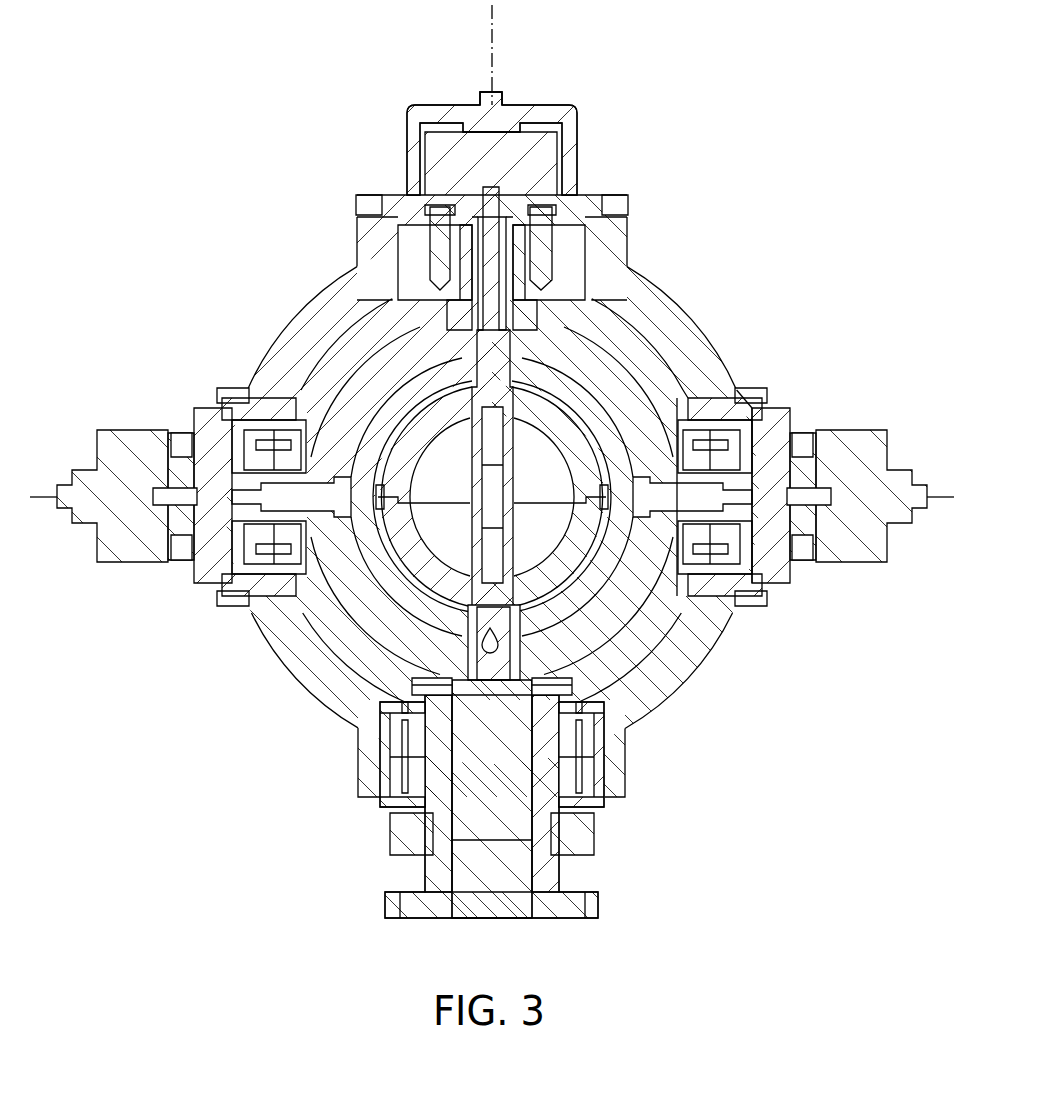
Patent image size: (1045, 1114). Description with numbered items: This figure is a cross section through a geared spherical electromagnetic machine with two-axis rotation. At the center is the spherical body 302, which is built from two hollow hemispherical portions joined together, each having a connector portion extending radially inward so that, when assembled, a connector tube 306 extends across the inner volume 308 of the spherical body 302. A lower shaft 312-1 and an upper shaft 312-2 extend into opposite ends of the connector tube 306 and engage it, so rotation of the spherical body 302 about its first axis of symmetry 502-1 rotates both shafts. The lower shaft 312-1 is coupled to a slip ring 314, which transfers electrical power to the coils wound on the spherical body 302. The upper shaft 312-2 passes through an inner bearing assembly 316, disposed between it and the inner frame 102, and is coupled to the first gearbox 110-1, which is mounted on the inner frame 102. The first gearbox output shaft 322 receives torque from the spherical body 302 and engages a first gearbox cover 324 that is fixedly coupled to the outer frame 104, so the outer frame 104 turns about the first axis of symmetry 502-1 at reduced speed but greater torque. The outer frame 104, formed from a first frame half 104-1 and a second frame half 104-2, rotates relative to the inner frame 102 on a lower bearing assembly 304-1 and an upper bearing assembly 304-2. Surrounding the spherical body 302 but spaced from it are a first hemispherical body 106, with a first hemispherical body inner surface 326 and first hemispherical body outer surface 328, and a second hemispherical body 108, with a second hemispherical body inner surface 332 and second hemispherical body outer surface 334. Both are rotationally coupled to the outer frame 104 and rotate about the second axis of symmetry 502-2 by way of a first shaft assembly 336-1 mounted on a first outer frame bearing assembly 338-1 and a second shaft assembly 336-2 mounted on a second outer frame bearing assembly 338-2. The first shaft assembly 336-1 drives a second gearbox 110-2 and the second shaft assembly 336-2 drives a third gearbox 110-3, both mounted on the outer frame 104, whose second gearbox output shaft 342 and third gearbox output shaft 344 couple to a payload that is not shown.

The inner frame 102 is at (574, 308).
The outer frame 104 is at (688, 306).
The first frame half 104-1 is at (265, 353).
The second frame half 104-2 is at (718, 385).
The first hemispherical body 106 is at (372, 360).
The second hemispherical body 108 is at (683, 385).
The first gearbox 110-1 is at (500, 131).
The second gearbox 110-2 is at (130, 466).
The third gearbox 110-3 is at (855, 512).
The spherical body 302 is at (637, 610).
The lower bearing assembly 304-1 is at (580, 780).
The upper bearing assembly 304-2 is at (575, 270).
The connector tube 306 is at (480, 455).
The inner volume 308 is at (463, 492).
The lower shaft 312-1 is at (496, 556).
The upper shaft 312-2 is at (418, 322).
The slip ring 314 is at (512, 762).
The inner bearing assembly 316 is at (527, 246).
The first gearbox output shaft 322 is at (483, 92).
The first gearbox cover 324 is at (418, 105).
The first hemispherical body inner surface 326 is at (397, 560).
The first hemispherical body outer surface 328 is at (340, 600).
The second hemispherical body inner surface 332 is at (607, 568).
The second hemispherical body outer surface 334 is at (618, 615).
The first shaft assembly 336-1 is at (228, 460).
The second shaft assembly 336-2 is at (752, 478).
The first outer frame bearing assembly 338-1 is at (240, 548).
The second outer frame bearing assembly 338-2 is at (730, 553).
The second gearbox output shaft 342 is at (57, 487).
The third gearbox output shaft 344 is at (927, 487).
The first axis of symmetry 502-1 is at (496, 16).
The second axis of symmetry 502-2 is at (45, 497).